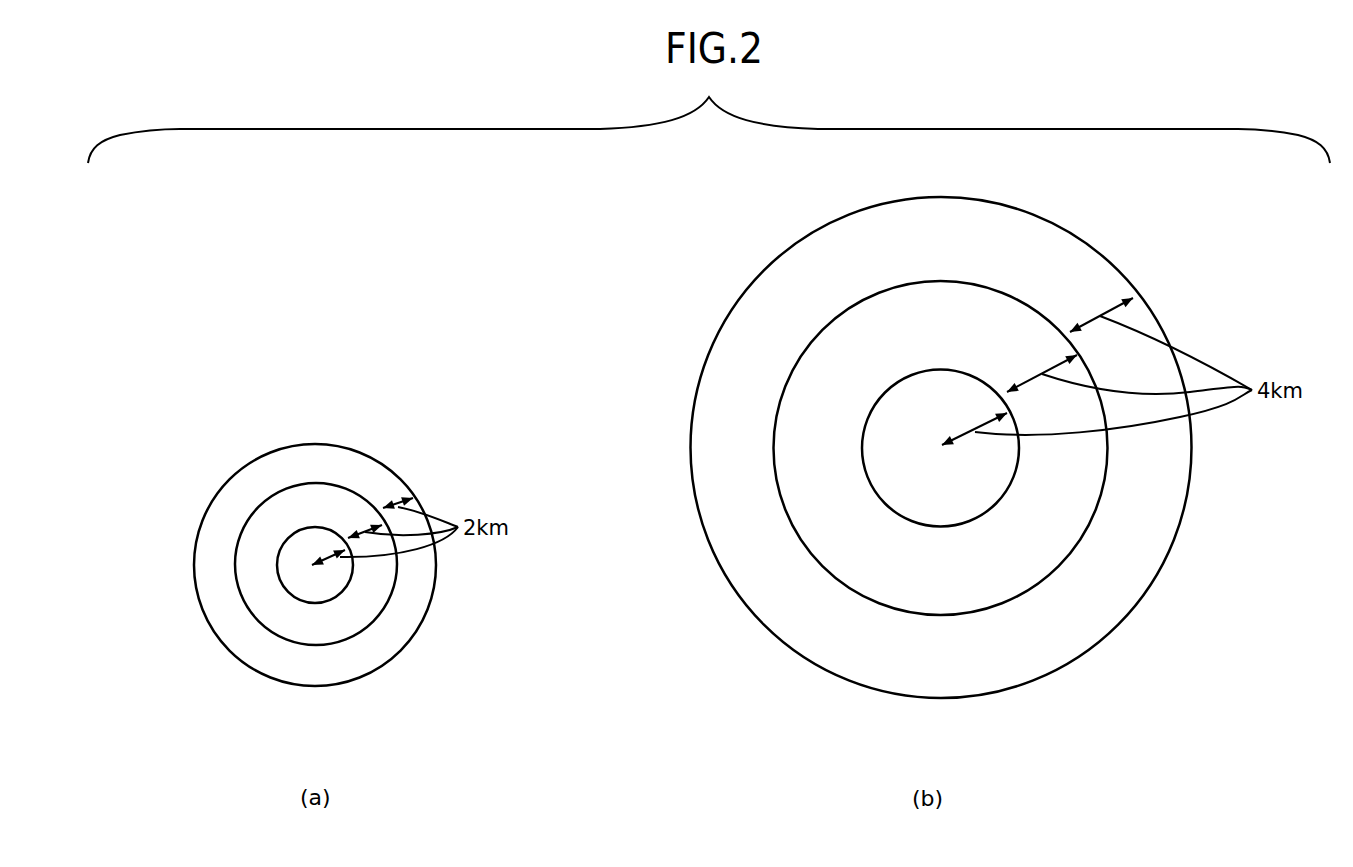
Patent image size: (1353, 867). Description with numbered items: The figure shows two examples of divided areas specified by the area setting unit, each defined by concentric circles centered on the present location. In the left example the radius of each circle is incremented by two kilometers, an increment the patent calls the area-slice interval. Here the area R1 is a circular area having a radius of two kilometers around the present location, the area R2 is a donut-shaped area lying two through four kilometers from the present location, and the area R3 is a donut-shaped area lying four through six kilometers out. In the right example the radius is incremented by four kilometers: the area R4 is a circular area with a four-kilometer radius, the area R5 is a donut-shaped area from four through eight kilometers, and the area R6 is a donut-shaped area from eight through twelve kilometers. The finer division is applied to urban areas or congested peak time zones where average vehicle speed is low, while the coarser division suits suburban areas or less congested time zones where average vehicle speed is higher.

The area R1 is at (291, 591).
The area R2 is at (236, 574).
The area R3 is at (200, 514).
The area R4 is at (875, 476).
The area R5 is at (808, 401).
The area R6 is at (750, 312).